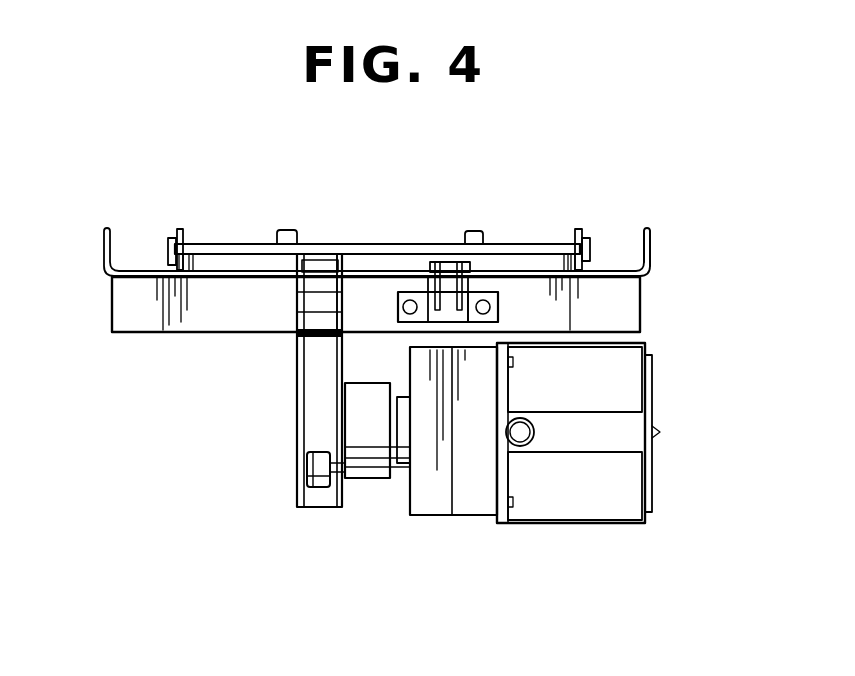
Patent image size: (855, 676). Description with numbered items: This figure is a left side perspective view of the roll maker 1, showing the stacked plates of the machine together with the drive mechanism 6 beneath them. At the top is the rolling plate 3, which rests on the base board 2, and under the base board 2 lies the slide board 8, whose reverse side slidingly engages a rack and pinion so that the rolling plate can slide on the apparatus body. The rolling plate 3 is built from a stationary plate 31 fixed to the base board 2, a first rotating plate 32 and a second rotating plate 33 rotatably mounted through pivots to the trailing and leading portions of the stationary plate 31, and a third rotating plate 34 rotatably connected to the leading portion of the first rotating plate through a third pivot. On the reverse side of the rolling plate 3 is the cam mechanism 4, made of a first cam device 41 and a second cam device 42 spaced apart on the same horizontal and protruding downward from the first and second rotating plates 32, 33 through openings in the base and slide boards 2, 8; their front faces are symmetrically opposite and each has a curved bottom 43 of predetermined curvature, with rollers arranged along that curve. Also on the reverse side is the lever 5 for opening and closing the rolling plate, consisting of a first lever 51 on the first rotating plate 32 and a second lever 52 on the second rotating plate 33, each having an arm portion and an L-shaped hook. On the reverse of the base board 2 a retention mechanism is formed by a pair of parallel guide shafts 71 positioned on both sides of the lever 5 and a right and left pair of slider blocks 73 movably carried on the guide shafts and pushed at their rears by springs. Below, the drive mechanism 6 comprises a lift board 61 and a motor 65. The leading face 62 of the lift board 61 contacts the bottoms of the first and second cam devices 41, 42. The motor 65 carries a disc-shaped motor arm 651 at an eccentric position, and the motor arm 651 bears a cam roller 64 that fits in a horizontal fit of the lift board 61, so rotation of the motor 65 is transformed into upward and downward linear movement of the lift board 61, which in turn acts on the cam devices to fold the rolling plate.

The roll maker 1 is at (585, 212).
The base board 2 is at (650, 250).
The rolling plate 3 is at (205, 215).
The cam mechanism 4 is at (218, 397).
The lever 5 is at (444, 252).
The drive mechanism 6 is at (352, 515).
The slide board 8 is at (633, 287).
The stationary plate 31 is at (315, 245).
The first rotating plate 32 is at (287, 237).
The second rotating plate 33 is at (474, 237).
The third rotating plate 34 is at (377, 249).
The first cam device 41 is at (300, 297).
The second cam device 42 is at (339, 295).
The curved bottom 43 is at (300, 320).
The first lever 51 is at (426, 262).
The second lever 52 is at (462, 292).
The lift board 61 is at (298, 463).
The leading face 62 is at (320, 340).
The cam roller 64 is at (318, 487).
The motor 65 is at (465, 508).
The guide shaft 71 is at (398, 305).
The slider block 73 is at (498, 305).
The motor arm 651 is at (377, 478).